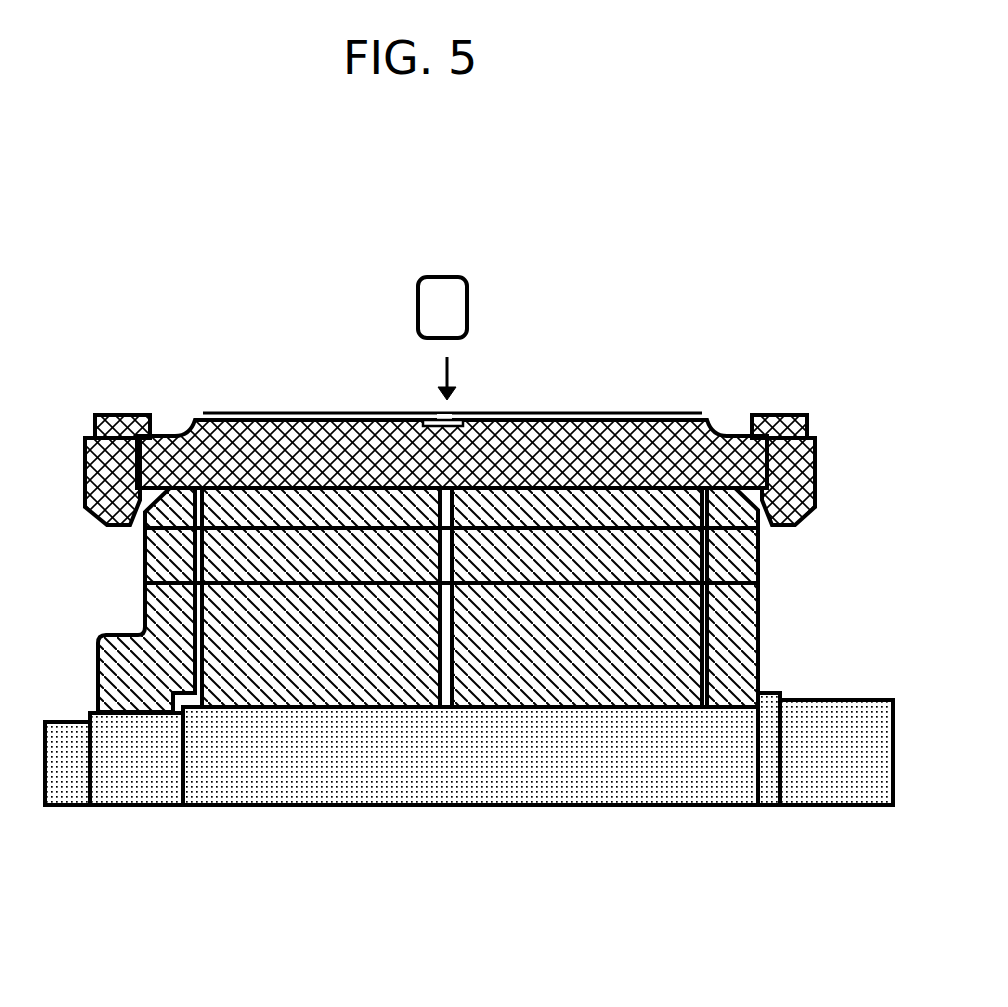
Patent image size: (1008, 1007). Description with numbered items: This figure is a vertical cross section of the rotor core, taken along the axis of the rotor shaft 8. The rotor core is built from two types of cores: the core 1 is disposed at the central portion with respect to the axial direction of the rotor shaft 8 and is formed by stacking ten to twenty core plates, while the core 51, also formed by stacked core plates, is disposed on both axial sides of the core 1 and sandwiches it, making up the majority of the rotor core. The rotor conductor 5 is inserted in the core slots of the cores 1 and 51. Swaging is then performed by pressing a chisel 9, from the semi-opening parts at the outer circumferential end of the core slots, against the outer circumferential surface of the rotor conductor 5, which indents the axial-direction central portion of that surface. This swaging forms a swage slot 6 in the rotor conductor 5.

The core 1 is at (447, 647).
The rotor conductor 5 is at (307, 412).
The core 51 is at (307, 658).
The swage slot 6 is at (464, 418).
The rotor shaft 8 is at (800, 700).
The chisel 9 is at (467, 312).